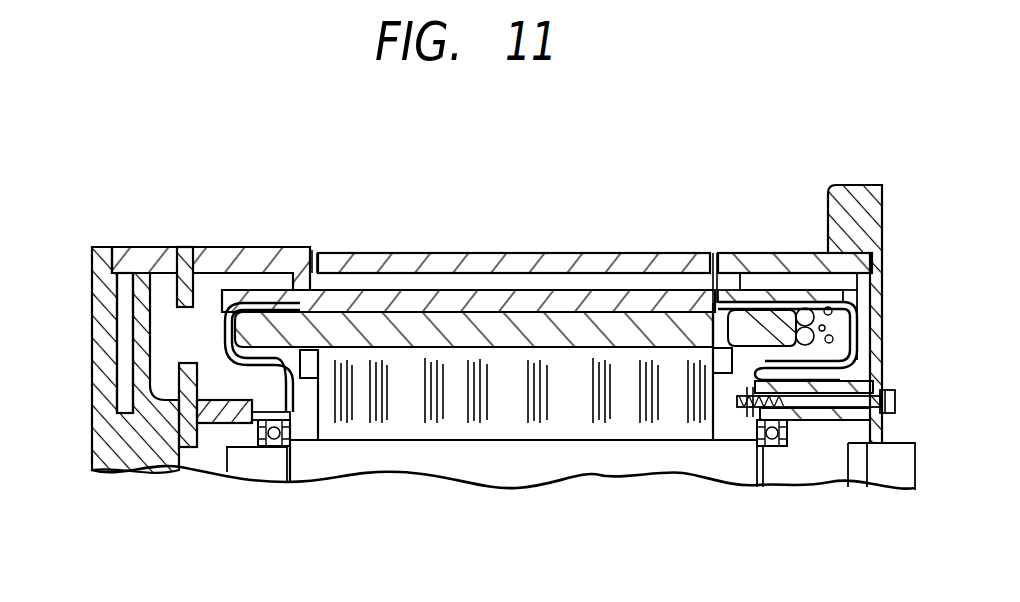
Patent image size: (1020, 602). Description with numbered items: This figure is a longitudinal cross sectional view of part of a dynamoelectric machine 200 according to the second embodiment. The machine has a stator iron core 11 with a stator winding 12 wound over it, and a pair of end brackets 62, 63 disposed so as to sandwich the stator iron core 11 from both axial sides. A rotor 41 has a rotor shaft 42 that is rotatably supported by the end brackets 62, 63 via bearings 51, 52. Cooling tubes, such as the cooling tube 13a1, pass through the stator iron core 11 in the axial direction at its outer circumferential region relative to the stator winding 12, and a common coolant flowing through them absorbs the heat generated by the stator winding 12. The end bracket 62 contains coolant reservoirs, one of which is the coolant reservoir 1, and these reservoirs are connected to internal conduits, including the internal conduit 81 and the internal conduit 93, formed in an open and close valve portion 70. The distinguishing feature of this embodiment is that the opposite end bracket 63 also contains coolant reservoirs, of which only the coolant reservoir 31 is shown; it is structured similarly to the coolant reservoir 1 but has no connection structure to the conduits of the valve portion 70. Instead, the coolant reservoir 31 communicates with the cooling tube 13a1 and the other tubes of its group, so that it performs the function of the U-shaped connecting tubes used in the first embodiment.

The dynamoelectric machine 200 is at (503, 322).
The open and close valve portion 70 is at (95, 222).
The internal conduit 93 is at (122, 356).
The end bracket 62 is at (240, 257).
The internal conduit 81 is at (165, 292).
The coolant reservoir 1 is at (208, 292).
The stator iron core 11 is at (467, 262).
The stator winding 12 is at (352, 330).
The cooling tube 13a1 is at (572, 283).
The end bracket 63 is at (746, 260).
The coolant reservoir 31 is at (785, 278).
The rotor 41 is at (500, 422).
The rotor shaft 42 is at (598, 470).
The bearing 51 is at (772, 446).
The bearing 52 is at (268, 446).